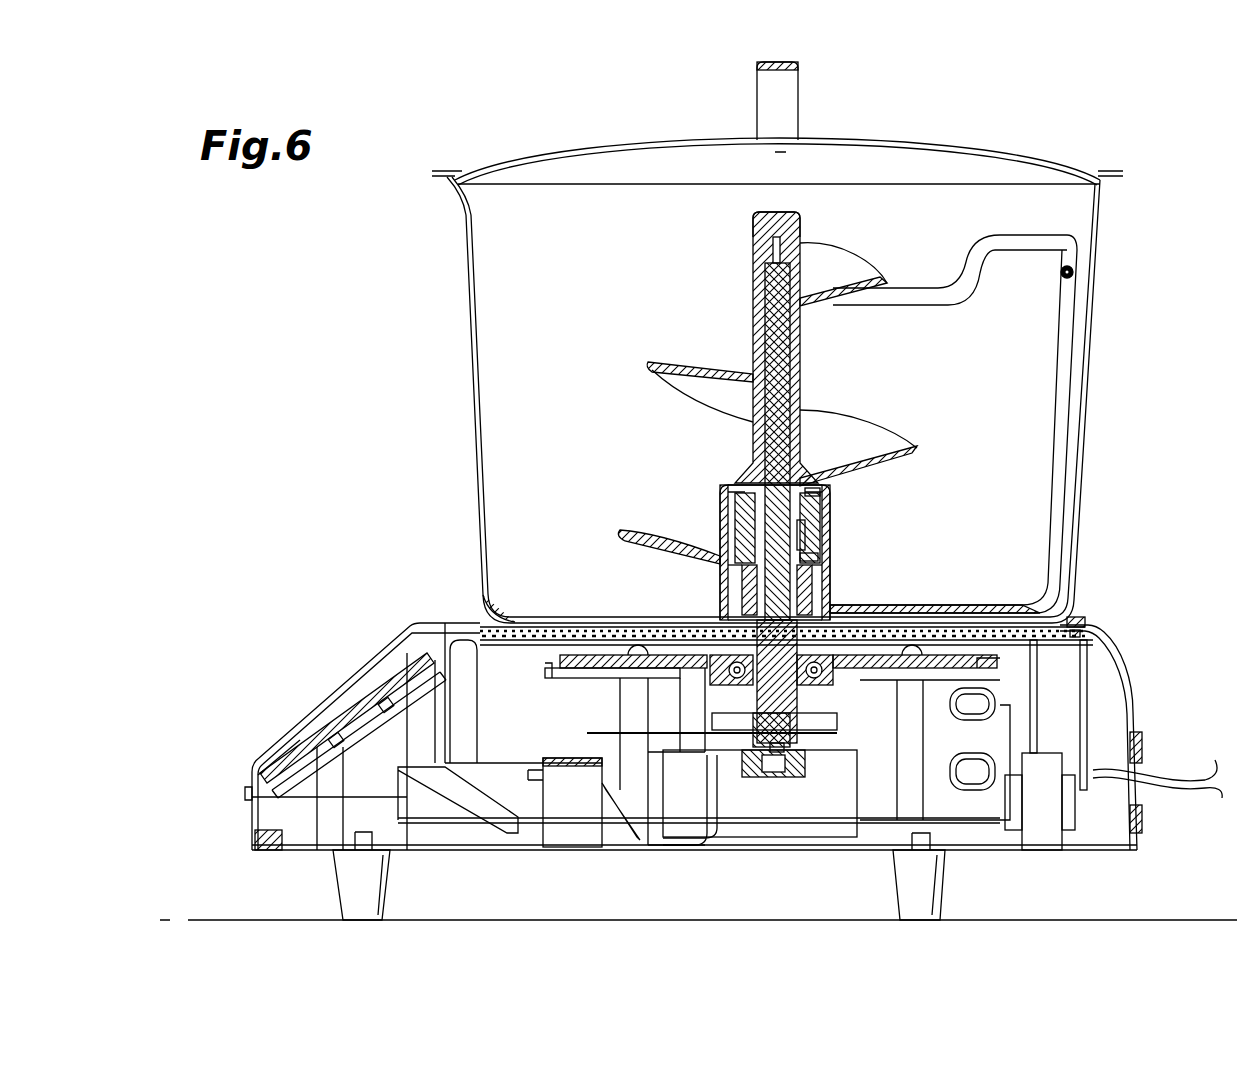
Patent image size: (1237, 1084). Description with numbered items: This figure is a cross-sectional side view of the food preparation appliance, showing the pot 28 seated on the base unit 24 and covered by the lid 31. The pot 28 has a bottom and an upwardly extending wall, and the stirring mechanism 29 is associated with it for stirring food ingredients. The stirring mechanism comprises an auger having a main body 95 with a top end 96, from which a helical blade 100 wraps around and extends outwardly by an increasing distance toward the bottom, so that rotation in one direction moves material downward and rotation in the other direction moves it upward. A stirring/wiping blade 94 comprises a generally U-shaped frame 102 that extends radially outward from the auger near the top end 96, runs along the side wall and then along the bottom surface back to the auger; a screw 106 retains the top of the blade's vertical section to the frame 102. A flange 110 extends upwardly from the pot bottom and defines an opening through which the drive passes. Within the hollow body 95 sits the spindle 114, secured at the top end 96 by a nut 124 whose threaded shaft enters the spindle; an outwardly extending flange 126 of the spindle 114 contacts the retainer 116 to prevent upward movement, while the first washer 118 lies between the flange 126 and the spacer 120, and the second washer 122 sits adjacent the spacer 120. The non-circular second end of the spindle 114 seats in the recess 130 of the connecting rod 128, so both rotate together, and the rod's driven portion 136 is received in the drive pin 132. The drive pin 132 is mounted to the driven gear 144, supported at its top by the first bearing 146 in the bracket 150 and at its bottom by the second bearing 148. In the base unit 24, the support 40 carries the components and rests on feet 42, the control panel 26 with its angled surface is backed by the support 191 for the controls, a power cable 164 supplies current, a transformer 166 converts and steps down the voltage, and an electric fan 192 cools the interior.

The base unit 24 is at (1150, 724).
The control panel 26 is at (330, 692).
The pot 28 is at (465, 298).
The stirring mechanism 29 is at (643, 357).
The lid 31 is at (990, 170).
The support 40 is at (290, 855).
The feet 42 is at (945, 872).
The stirring/wiping blade 94 is at (1045, 232).
The main body 95 is at (750, 276).
The top end 96 is at (821, 219).
The helical blade 100 is at (885, 441).
The frame 102 is at (1070, 252).
The screw 106 is at (1075, 274).
The flange 110 is at (832, 582).
The spindle 114 is at (752, 512).
The retainer 116 is at (832, 510).
The first washer 118 is at (832, 483).
The spacer 120 is at (806, 535).
The second washer 122 is at (818, 558).
The nut 124 is at (752, 213).
The flange 126 is at (735, 485).
The connecting rod 128 is at (742, 608).
The recess 130 is at (742, 575).
The drive pin 132 is at (815, 688).
The driven portion 136 is at (752, 680).
The driven gear 144 is at (750, 735).
The first bearing 146 is at (870, 700).
The second bearing 148 is at (790, 780).
The bracket 150 is at (977, 656).
The power cable 164 is at (1195, 795).
The transformer 166 is at (1045, 840).
The support 191 is at (262, 758).
The electric fan 192 is at (503, 800).